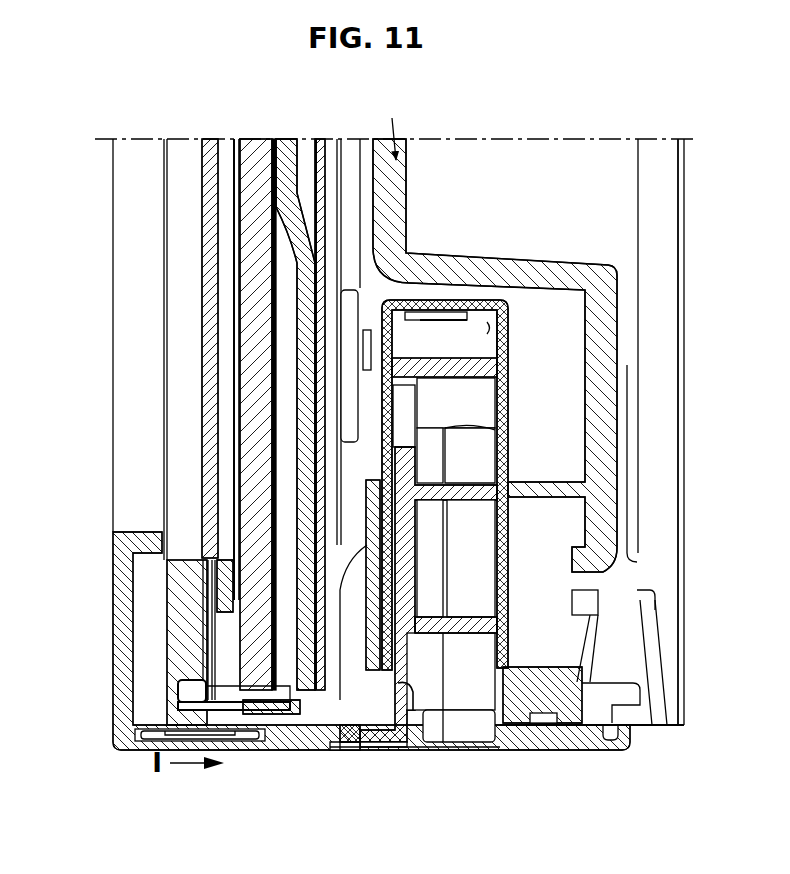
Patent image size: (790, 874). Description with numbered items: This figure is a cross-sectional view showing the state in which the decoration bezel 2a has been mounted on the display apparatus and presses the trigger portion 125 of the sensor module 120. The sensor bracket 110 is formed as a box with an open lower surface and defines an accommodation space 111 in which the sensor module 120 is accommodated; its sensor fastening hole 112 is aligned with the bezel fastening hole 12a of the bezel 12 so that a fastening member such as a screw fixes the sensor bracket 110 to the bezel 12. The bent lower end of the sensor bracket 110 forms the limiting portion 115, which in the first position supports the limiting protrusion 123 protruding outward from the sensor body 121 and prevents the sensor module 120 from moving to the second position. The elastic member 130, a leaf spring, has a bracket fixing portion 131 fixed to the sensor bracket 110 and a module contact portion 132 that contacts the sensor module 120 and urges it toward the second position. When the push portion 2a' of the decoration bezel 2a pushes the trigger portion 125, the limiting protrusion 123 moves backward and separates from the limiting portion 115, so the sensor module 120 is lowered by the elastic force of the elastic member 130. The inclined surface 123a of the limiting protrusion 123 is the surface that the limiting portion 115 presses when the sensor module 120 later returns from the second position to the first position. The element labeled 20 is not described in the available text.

The tub 20 is at (205, 322).
The bezel 12 is at (177, 602).
The bezel fastening hole 12a is at (282, 736).
The limiting protrusion 123 is at (373, 695).
The inclined surface 123a is at (413, 690).
The trigger portion 125 is at (377, 745).
The sensor fastening hole 112 is at (340, 750).
The limiting portion 115 is at (350, 740).
The decoration bezel 2a is at (338, 641).
The push portion 2a' is at (372, 796).
The sensor bracket 110 is at (417, 293).
The accommodation space 111 is at (502, 325).
The sensor module 120 is at (424, 457).
The sensor body 121 is at (412, 557).
The elastic member 130 is at (496, 360).
The bracket fixing portion 131 is at (453, 312).
The module contact portion 132 is at (490, 328).